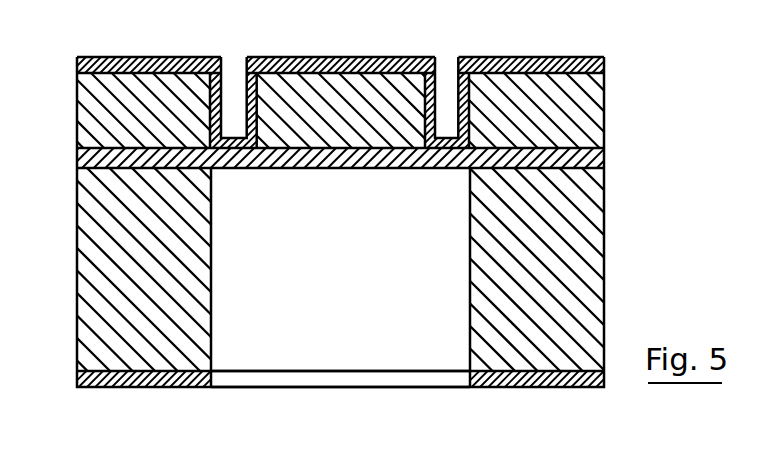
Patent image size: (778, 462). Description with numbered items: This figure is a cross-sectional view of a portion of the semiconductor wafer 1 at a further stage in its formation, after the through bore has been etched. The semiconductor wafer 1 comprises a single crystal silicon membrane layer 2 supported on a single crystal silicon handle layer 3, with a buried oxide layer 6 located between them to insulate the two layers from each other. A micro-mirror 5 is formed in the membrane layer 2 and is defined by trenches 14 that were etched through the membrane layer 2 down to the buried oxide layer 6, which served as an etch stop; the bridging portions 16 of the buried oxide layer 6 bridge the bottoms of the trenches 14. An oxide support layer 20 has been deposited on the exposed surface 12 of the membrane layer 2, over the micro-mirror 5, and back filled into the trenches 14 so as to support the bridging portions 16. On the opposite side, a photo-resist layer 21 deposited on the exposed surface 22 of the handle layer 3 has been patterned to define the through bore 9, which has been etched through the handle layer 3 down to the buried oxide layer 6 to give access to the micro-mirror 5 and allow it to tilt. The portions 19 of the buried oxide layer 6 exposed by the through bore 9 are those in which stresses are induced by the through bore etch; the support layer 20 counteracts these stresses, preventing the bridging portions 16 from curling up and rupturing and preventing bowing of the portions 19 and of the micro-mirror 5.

The semiconductor wafer 1 is at (633, 43).
The membrane layer 2 is at (592, 118).
The handle layer 3 is at (590, 262).
The micro-mirror 5 is at (337, 83).
The buried oxide layer 6 is at (607, 157).
The through bore 9 is at (340, 353).
The exposed surface 12 is at (538, 67).
The trench 14 is at (268, 97).
The bridging portion 16 is at (225, 172).
The portion of the buried oxide layer 19 is at (333, 163).
The support layer 20 is at (521, 65).
The photo-resist layer 21 is at (575, 388).
The exposed surface 22 is at (507, 387).